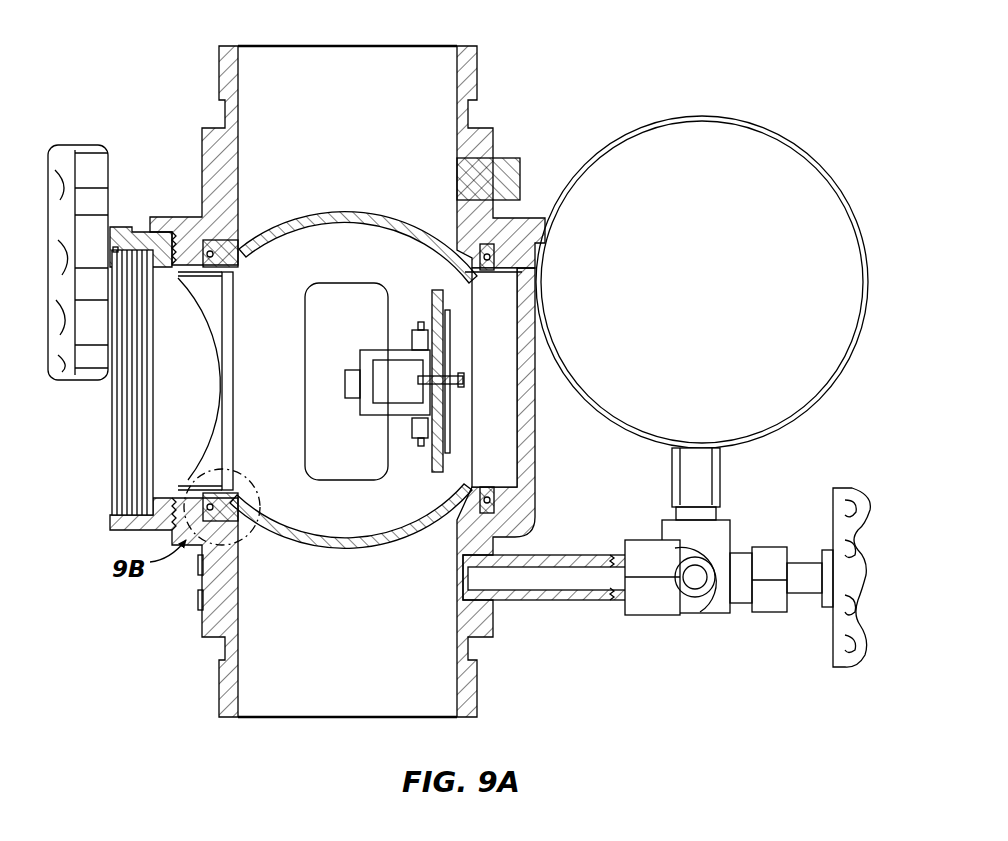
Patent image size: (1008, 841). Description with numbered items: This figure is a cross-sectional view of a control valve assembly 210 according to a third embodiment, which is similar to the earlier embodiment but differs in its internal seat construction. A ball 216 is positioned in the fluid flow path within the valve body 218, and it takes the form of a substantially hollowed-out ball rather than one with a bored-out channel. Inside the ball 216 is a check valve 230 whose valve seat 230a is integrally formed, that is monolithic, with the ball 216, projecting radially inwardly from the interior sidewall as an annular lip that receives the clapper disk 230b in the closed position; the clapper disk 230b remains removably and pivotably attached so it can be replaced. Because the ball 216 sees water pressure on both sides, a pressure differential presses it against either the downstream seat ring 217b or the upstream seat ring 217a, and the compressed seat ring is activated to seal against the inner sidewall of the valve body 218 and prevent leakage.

The control valve assembly 210 is at (604, 61).
The ball 216 is at (300, 545).
The upstream seat ring 217a is at (455, 530).
The downstream seat ring 217b is at (465, 245).
The valve body 218 is at (202, 143).
The check valve 230 is at (384, 385).
The valve seat 230a is at (440, 478).
The clapper disk 230b is at (432, 300).